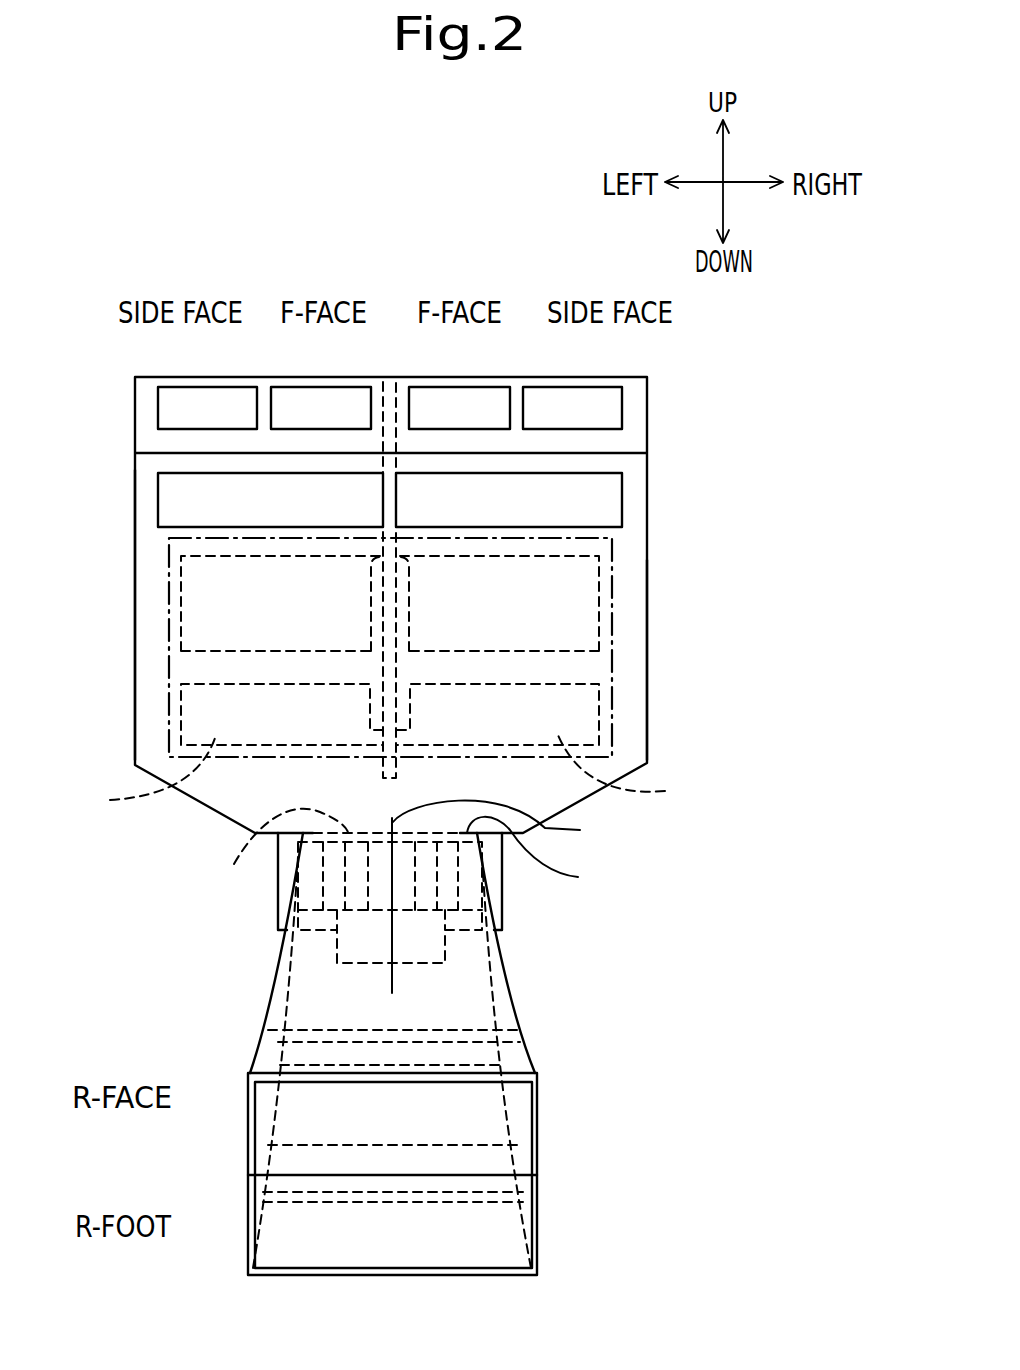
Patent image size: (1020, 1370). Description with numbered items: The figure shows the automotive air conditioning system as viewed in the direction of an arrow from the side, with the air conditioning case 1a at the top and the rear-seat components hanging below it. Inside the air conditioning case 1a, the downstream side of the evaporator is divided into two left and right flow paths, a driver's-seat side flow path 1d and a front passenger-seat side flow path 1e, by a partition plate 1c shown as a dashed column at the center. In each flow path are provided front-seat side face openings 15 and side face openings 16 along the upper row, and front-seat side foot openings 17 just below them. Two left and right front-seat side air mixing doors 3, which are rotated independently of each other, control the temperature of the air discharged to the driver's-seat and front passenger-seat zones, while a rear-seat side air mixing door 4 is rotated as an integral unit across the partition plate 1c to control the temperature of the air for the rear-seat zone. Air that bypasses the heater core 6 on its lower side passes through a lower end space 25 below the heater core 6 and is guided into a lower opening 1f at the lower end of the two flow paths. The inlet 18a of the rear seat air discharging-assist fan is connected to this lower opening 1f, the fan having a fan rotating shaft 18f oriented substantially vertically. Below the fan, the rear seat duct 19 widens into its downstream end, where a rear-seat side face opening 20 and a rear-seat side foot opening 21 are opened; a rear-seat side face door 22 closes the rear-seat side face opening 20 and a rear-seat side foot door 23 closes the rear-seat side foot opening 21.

The air conditioning case 1a is at (647, 667).
The partition plate 1c is at (412, 700).
The driver's-seat side flow path 1d is at (630, 700).
The front passenger-seat side flow path 1e is at (147, 723).
The lower opening 1f is at (234, 864).
The front-seat side air mixing doors 3 is at (677, 608).
The rear-seat side air mixing door 4 is at (387, 774).
The heater core 6 is at (170, 660).
The front-seat side face openings 15 is at (462, 405).
The side face openings 16 is at (575, 405).
The front-seat side foot openings 17 is at (680, 510).
The inlet 18a is at (547, 856).
The fan rotating shaft 18f is at (393, 985).
The rear seat duct 19 is at (320, 1024).
The rear-seat side face opening 20 is at (290, 1107).
The rear-seat side foot opening 21 is at (280, 1233).
The rear-seat side face door 22 is at (505, 1062).
The rear-seat side foot door 23 is at (523, 1153).
The lower end space 25 is at (502, 826).